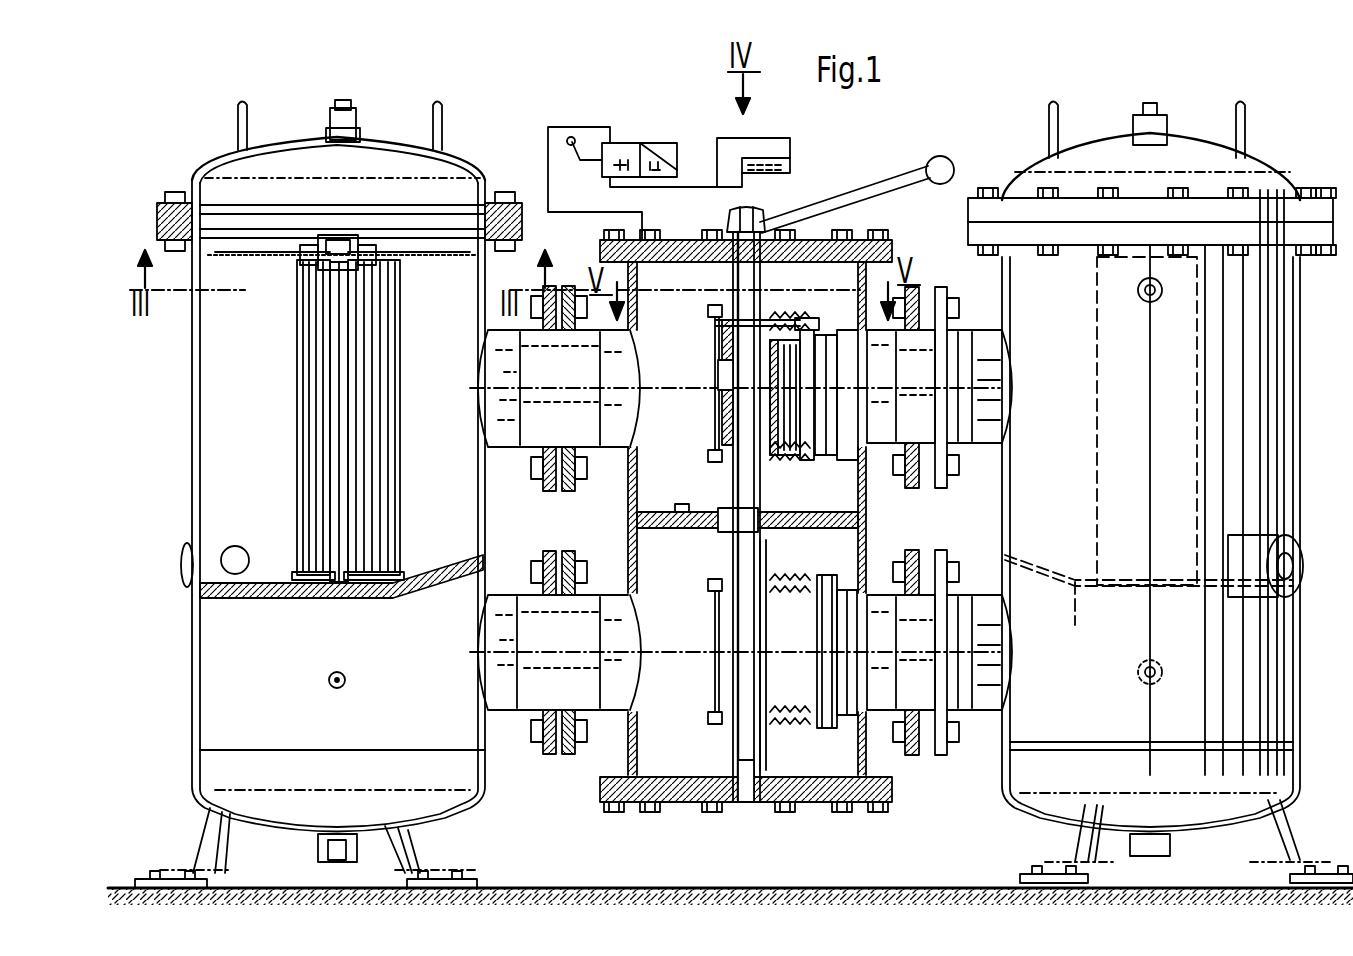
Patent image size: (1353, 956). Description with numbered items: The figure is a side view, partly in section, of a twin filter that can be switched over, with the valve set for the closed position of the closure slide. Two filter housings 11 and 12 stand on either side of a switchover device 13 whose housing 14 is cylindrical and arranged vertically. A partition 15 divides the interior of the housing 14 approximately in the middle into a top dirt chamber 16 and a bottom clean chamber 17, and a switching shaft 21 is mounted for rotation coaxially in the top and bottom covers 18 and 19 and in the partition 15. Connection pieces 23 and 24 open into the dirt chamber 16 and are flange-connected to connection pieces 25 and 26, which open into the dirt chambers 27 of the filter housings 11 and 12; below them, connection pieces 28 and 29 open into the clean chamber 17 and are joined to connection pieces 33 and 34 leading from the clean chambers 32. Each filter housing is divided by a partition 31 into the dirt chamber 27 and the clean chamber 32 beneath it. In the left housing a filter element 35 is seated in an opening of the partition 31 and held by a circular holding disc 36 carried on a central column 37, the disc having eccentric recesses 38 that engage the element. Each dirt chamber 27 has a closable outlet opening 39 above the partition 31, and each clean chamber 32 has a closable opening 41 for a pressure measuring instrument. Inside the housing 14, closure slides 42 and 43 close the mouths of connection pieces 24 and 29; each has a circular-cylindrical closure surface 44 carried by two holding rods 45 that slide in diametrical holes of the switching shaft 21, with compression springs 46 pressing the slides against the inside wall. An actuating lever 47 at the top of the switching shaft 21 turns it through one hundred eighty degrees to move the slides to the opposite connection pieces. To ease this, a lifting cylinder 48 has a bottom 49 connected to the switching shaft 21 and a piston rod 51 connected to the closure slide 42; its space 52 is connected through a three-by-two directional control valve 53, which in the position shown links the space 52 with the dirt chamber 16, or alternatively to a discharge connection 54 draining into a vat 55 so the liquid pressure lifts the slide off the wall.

The filter housing 11 is at (192, 492).
The filter housing 12 is at (1258, 490).
The switchover device 13 is at (750, 820).
The housing 14 is at (630, 512).
The partition 15 is at (818, 520).
The dirt chamber 16 is at (693, 426).
The clean chamber 17 is at (693, 696).
The top cover 18 is at (683, 270).
The bottom cover 19 is at (682, 790).
The switching shaft 21 is at (752, 677).
The connection piece 23 is at (628, 422).
The connection piece 24 is at (926, 422).
The connection piece 25 is at (506, 422).
The connection piece 26 is at (988, 345).
The dirt chamber 27 is at (264, 401).
The connection piece 28 is at (628, 689).
The connection piece 29 is at (926, 689).
The partition 31 is at (258, 598).
The clean chamber 32 is at (426, 706).
The connection piece 33 is at (506, 689).
The connection piece 34 is at (985, 700).
The filter element 35 is at (380, 458).
The holding disc 36 is at (442, 258).
The central column 37 is at (300, 440).
The recess 38 is at (270, 255).
The outlet opening 39 is at (236, 555).
The opening 41 is at (330, 680).
The closure slide 42 is at (856, 450).
The closure slide 43 is at (847, 700).
The closure surface 44 is at (838, 372).
The holding rod 45 is at (712, 318).
The compression spring 46 is at (775, 325).
The actuating lever 47 is at (862, 205).
The lifting cylinder 48 is at (806, 326).
The bottom 49 is at (740, 425).
The piston rod 51 is at (800, 382).
The space 52 is at (735, 372).
The 3/2 directional control valve 53 is at (631, 124).
The discharge connection 54 is at (695, 185).
The vat 55 is at (798, 170).